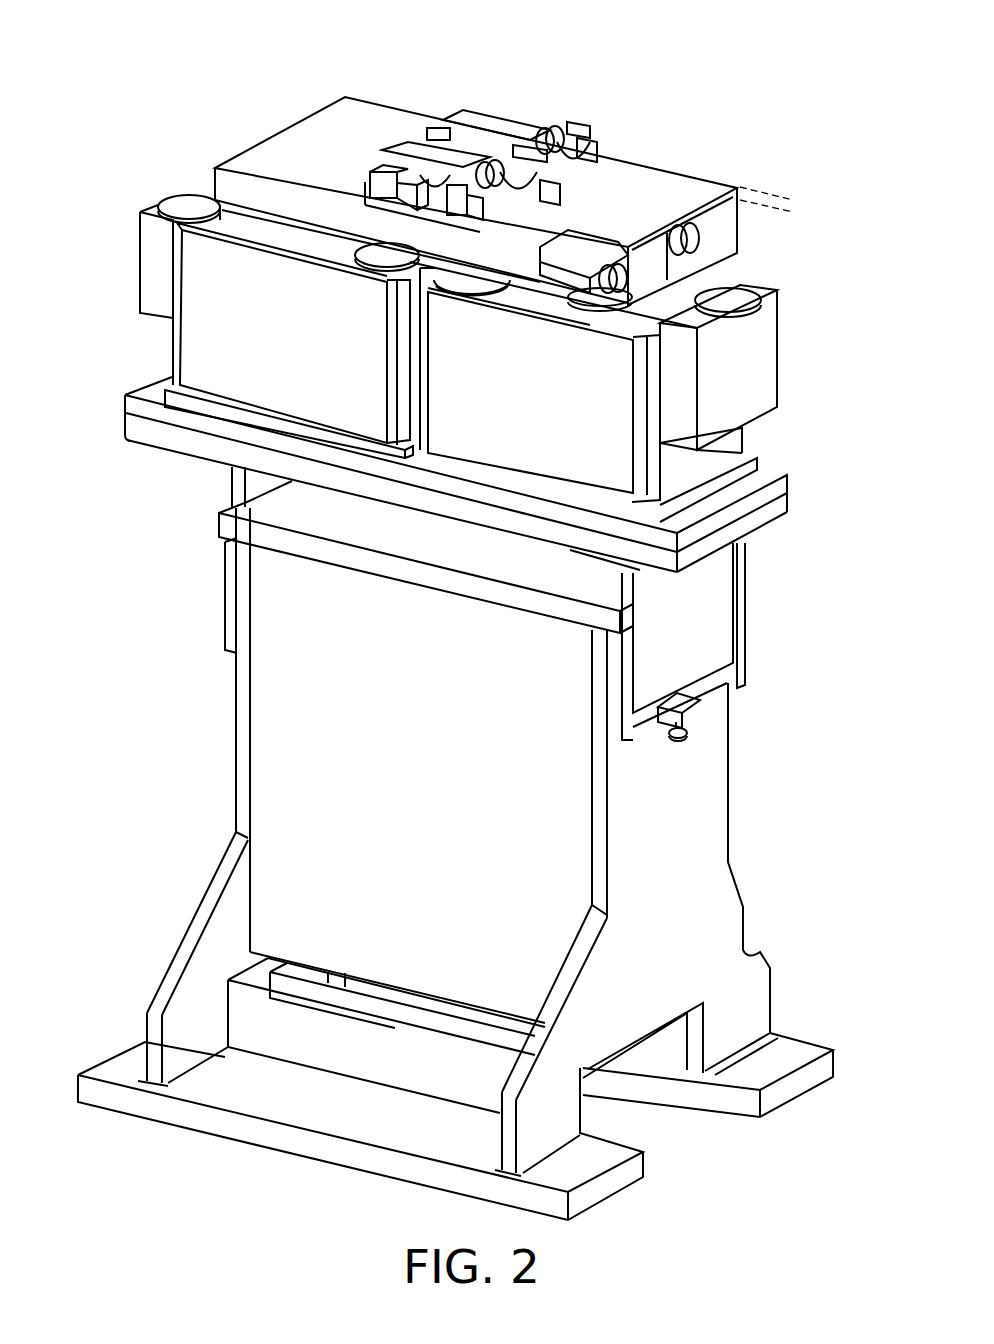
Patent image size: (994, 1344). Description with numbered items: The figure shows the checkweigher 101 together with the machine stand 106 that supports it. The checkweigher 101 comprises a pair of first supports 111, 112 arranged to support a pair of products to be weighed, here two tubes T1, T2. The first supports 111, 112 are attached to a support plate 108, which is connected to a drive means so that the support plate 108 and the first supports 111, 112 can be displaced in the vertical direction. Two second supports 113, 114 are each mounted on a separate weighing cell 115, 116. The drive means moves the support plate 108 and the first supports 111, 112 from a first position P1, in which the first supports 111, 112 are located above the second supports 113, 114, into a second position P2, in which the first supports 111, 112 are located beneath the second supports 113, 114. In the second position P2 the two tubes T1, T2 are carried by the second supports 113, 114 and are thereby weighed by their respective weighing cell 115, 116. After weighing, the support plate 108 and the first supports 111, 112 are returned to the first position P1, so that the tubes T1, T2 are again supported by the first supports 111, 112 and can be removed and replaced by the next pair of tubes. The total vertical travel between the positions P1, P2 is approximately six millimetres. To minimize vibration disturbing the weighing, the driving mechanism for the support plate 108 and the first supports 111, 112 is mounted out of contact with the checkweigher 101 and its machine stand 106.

The checkweigher 101 is at (773, 50).
The machine stand 106 is at (677, 812).
The support plate 108 is at (662, 197).
The first support 111 is at (652, 203).
The first support 112 is at (378, 183).
The second support 113 is at (527, 140).
The second support 114 is at (417, 155).
The weighing cell 115 is at (742, 372).
The weighing cell 116 is at (277, 337).
The tube T1 is at (397, 147).
The tube T2 is at (462, 113).
The first position P1 is at (777, 193).
The second position P2 is at (782, 213).